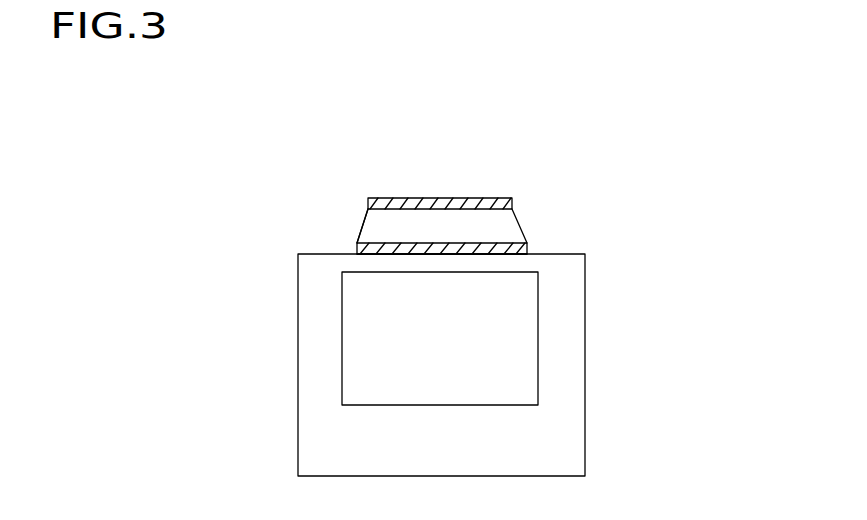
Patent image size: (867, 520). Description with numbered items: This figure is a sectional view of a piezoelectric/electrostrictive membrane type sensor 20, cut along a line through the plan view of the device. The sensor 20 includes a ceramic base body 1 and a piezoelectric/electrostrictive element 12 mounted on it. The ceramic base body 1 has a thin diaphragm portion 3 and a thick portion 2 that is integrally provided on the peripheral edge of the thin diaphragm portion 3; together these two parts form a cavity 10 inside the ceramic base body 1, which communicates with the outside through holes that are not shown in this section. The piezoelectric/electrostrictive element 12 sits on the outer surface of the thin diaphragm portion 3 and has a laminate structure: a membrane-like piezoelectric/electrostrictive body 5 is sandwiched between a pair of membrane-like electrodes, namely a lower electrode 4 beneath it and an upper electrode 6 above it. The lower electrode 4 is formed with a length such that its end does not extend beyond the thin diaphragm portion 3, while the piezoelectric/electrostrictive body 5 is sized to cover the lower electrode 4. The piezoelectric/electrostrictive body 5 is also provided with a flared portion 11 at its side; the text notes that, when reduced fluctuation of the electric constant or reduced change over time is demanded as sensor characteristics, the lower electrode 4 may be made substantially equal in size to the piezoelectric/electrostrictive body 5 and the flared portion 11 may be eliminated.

The piezoelectric/electrostrictive membrane type sensor 20 is at (612, 157).
The piezoelectric/electrostrictive element 12 is at (702, 192).
The upper electrode 6 is at (488, 203).
The piezoelectric/electrostrictive body 5 is at (488, 228).
The flared portion 11 is at (363, 232).
The lower electrode 4 is at (423, 248).
The ceramic base body 1 is at (700, 255).
The thick portion 2 is at (553, 437).
The cavity 10 is at (515, 353).
The thin diaphragm portion 3 is at (423, 264).